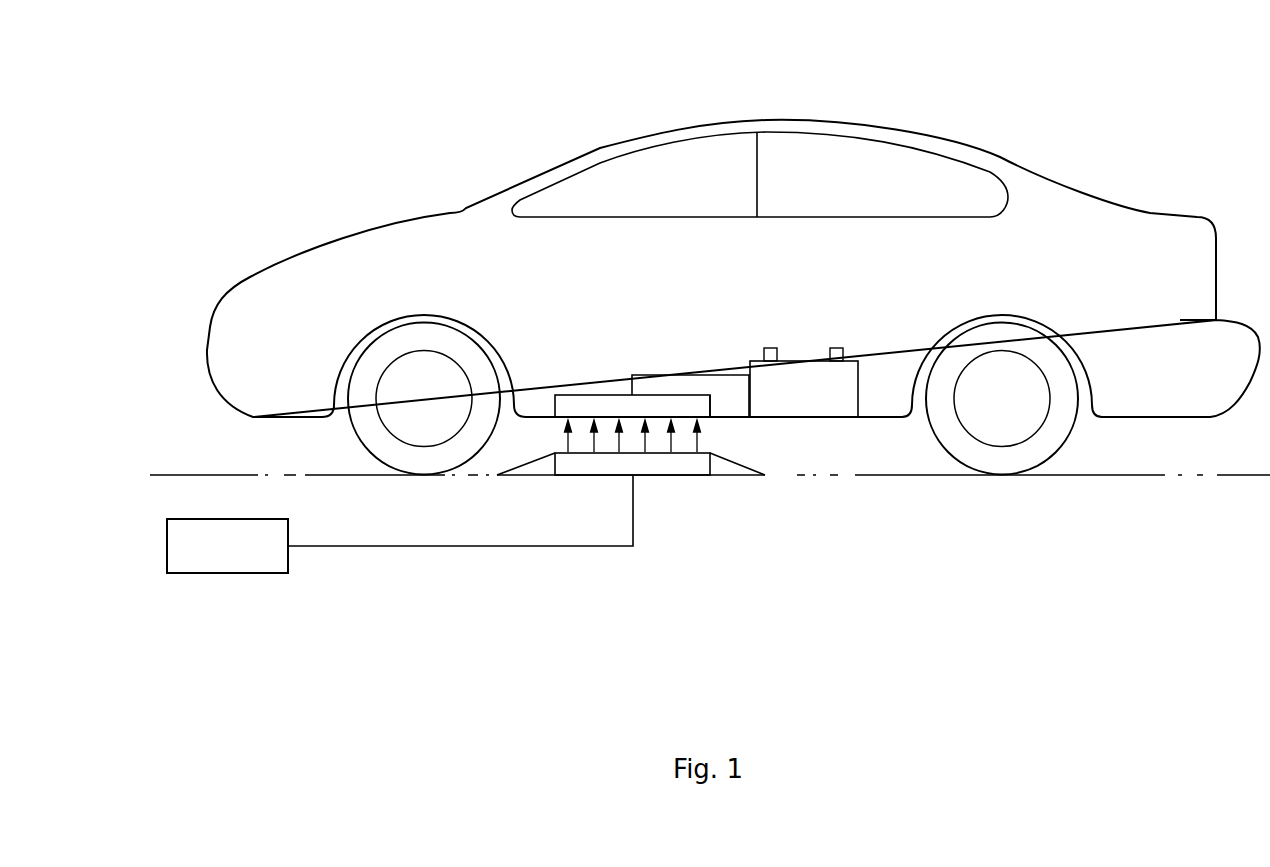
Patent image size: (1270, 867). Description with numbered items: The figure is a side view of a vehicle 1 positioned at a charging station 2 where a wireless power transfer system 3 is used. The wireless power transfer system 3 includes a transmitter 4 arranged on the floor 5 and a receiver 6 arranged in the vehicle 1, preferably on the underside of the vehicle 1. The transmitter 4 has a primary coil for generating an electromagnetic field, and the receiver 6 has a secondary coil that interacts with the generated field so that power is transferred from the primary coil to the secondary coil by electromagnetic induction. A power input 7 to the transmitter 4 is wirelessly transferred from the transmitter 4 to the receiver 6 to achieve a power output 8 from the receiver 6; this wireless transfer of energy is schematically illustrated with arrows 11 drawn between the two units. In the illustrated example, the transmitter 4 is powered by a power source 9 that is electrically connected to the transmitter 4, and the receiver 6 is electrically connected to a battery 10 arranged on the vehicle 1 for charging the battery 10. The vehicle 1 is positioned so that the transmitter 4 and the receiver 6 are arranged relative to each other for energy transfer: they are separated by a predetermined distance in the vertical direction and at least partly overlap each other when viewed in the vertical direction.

The vehicle 1 is at (779, 120).
The charging station 2 is at (733, 266).
The wireless power transfer system 3 is at (643, 530).
The transmitter 4 is at (667, 463).
The floor 5 is at (917, 476).
The receiver 6 is at (594, 407).
The power input 7 is at (463, 547).
The power output 8 is at (683, 375).
The power source 9 is at (232, 573).
The battery 10 is at (808, 388).
The arrows 11 is at (697, 442).